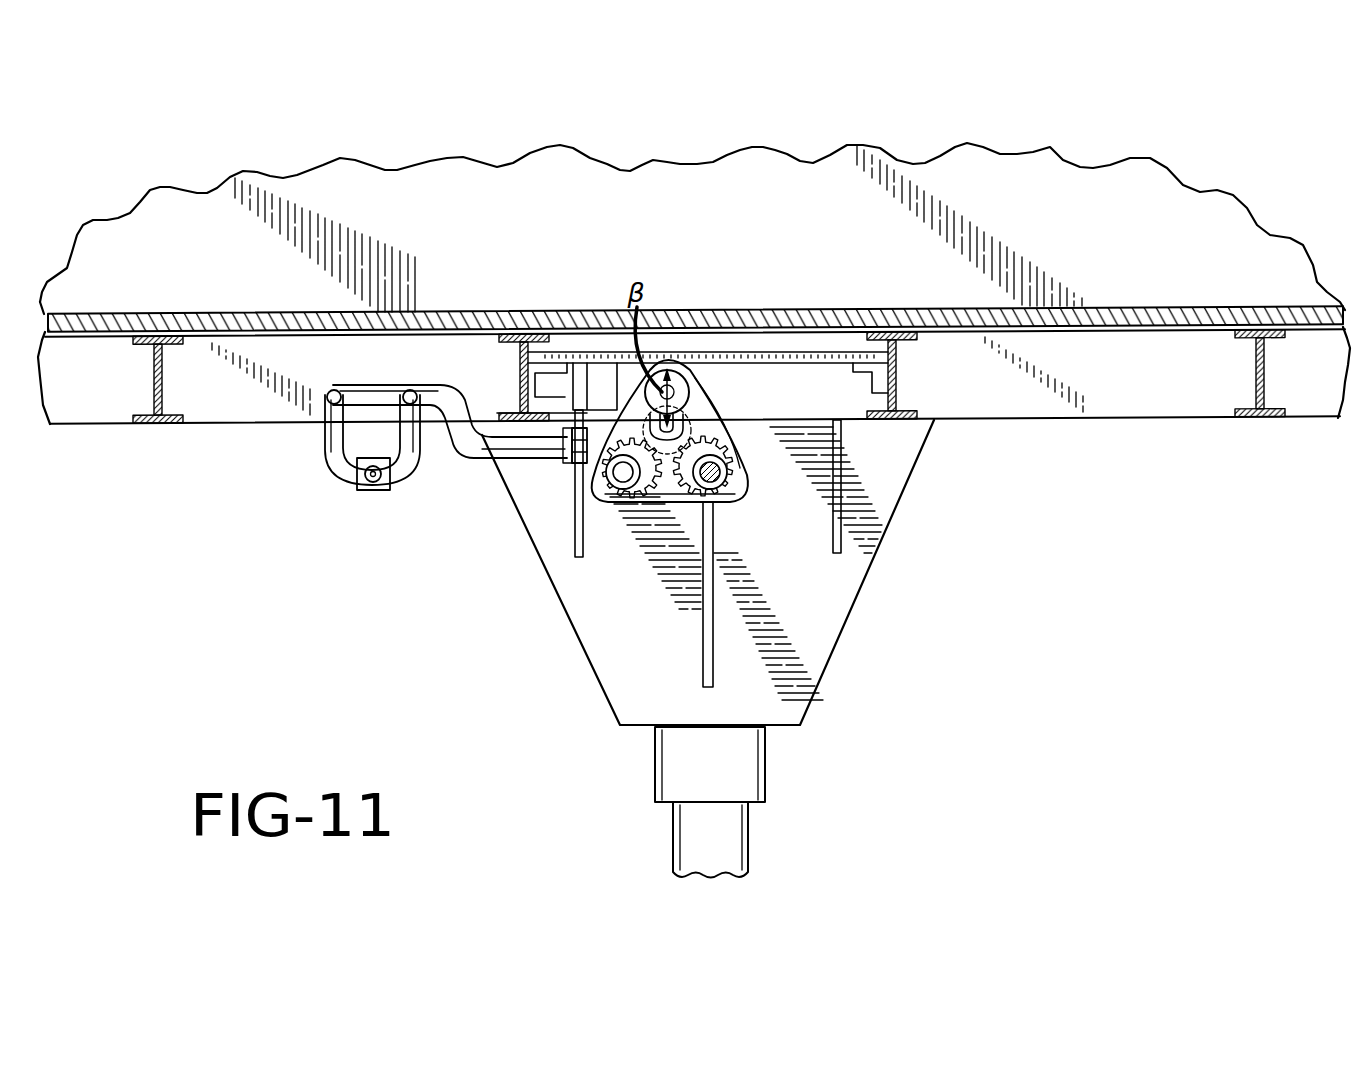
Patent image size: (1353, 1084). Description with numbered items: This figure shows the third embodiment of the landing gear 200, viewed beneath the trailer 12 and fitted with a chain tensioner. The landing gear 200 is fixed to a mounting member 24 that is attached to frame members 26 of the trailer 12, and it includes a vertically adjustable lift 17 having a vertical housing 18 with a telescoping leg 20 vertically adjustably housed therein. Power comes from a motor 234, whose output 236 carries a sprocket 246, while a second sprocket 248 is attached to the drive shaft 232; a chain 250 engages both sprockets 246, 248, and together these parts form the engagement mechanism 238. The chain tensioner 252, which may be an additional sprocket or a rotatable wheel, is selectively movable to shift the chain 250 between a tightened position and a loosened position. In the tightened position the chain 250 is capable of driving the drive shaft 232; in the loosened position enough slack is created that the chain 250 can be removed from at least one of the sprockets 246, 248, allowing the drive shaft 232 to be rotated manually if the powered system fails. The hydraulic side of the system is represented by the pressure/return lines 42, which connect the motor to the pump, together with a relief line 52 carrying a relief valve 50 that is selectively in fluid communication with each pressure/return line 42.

The trailer 12 is at (1235, 195).
The frame members 26 is at (153, 385).
The pressure/return lines 42 is at (428, 386).
The relief line 52 is at (322, 463).
The relief valve 50 is at (373, 490).
The motor 234 is at (608, 393).
The chain tensioner 252 is at (684, 386).
The engagement mechanism 238 is at (628, 518).
The output 236 is at (620, 476).
The sprocket 246 is at (620, 497).
The chain 250 is at (752, 462).
The sprocket 248 is at (728, 480).
The drive shaft 232 is at (698, 470).
The mounting members 24 is at (803, 622).
The landing gear 200 is at (503, 614).
The vertical housing 18 is at (673, 768).
The vertically adjustable lift 17 is at (778, 767).
The telescoping leg 20 is at (690, 843).